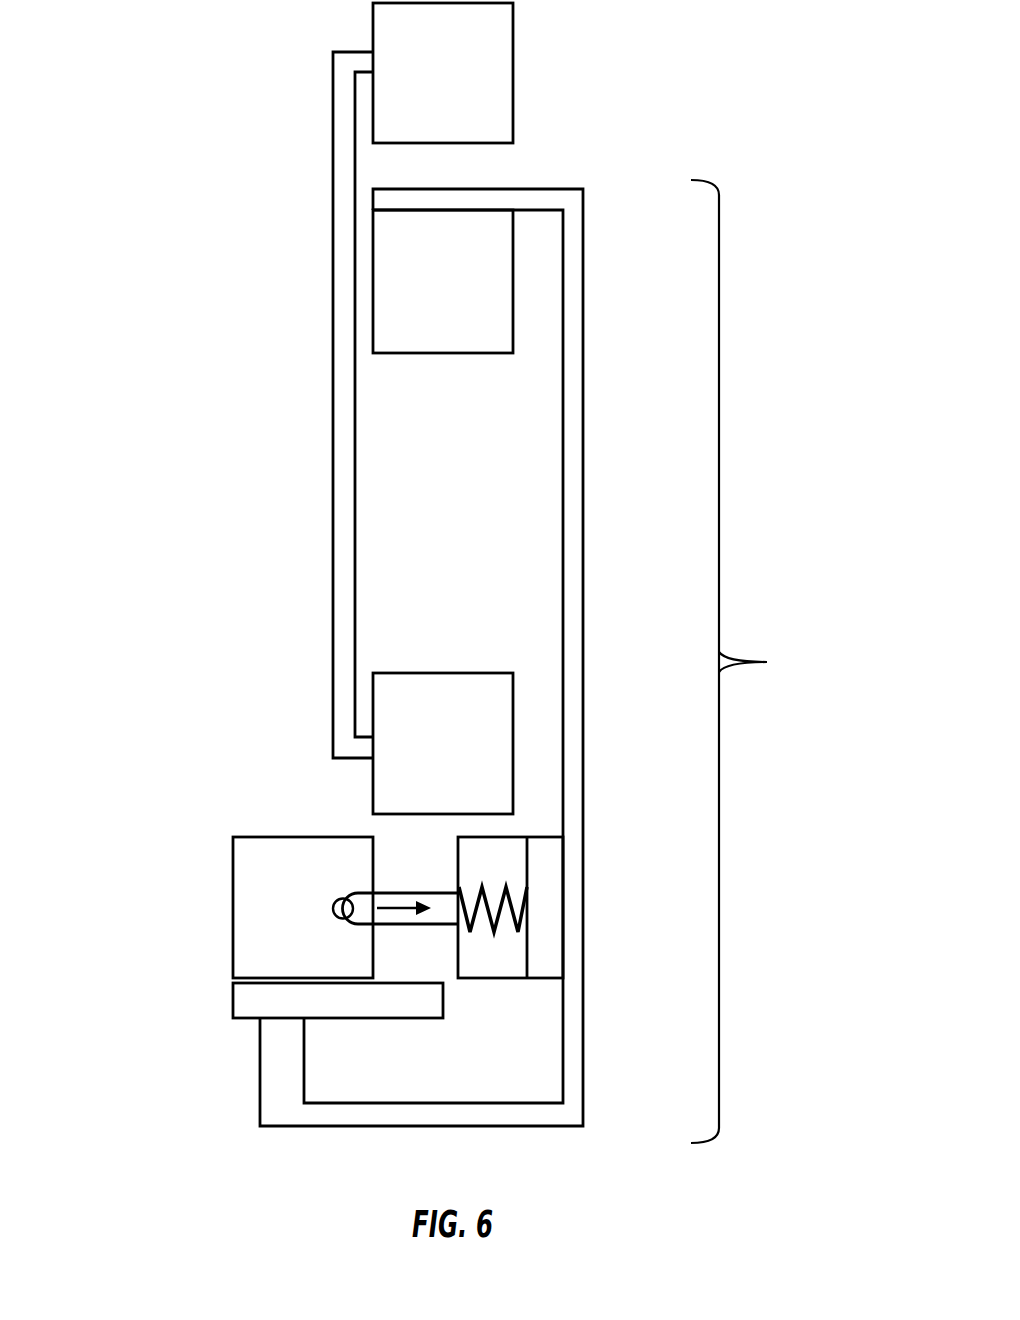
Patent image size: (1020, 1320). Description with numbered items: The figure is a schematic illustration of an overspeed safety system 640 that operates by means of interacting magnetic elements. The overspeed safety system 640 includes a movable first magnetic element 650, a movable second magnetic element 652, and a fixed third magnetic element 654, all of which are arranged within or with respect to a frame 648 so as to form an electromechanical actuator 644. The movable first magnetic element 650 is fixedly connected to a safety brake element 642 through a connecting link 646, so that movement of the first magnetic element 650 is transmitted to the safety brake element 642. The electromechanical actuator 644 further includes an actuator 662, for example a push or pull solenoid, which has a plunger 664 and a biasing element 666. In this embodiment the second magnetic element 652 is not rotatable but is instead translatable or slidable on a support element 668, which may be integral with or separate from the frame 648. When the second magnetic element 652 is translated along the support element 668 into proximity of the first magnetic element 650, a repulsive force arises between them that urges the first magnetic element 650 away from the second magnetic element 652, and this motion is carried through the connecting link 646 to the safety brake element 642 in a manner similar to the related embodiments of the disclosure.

The overspeed safety system 640 is at (107, 343).
The safety brake element 642 is at (500, 39).
The electromechanical actuator 644 is at (753, 661).
The connecting link 646 is at (333, 500).
The frame 648 is at (583, 566).
The movable first magnetic element 650 is at (383, 786).
The movable second magnetic element 652 is at (243, 941).
The fixed third magnetic element 654 is at (502, 278).
The actuator 662 is at (550, 893).
The plunger 664 is at (400, 893).
The biasing element 666 is at (480, 935).
The support element 668 is at (275, 1068).